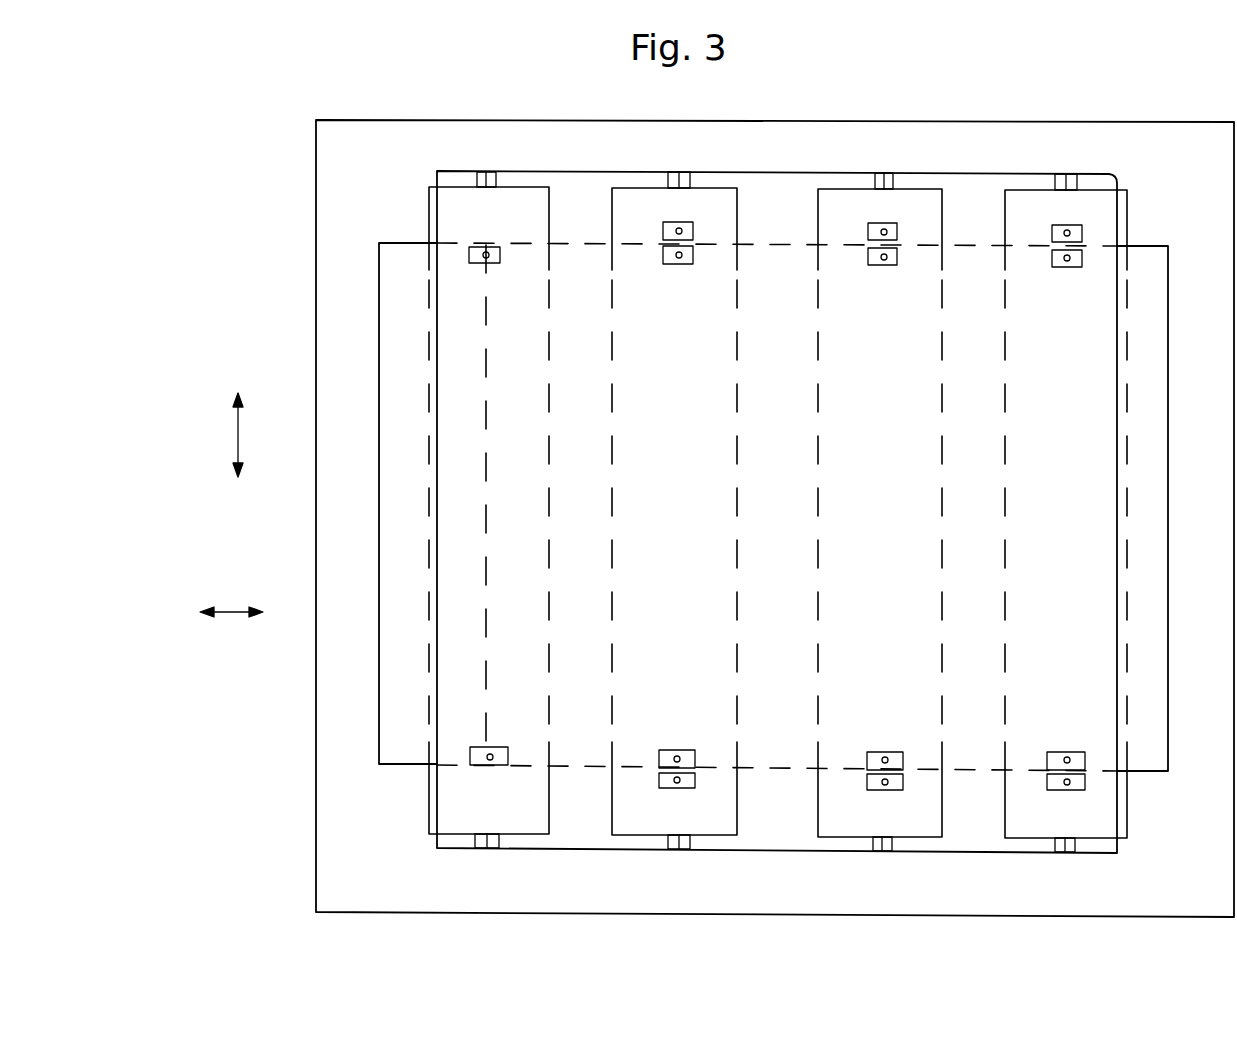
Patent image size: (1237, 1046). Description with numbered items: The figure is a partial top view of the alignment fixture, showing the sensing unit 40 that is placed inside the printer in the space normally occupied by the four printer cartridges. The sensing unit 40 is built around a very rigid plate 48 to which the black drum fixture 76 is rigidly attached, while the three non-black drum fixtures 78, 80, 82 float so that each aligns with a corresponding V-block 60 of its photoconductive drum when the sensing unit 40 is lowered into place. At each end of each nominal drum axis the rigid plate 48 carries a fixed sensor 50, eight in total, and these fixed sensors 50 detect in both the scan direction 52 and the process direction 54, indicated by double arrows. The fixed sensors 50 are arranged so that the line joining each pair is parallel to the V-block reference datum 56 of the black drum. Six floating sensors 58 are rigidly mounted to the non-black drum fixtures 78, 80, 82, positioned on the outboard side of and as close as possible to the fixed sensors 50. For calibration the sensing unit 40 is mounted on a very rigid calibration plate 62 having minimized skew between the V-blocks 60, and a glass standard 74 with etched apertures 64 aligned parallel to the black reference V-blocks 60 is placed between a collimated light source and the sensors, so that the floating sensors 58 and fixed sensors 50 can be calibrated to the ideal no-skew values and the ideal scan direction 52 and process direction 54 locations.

The sensing unit 40 is at (228, 186).
The rigid plate 48 is at (378, 722).
The fixed sensor 50 is at (665, 246).
The scan direction 52 is at (238, 437).
The process direction 54 is at (225, 612).
The V-block reference datum 56 is at (488, 392).
The floating sensor 58 is at (693, 222).
The V-block 60 is at (487, 171).
The calibration plate 62 is at (316, 697).
The etched aperture 64 is at (489, 257).
The glass standard 74 is at (1007, 173).
The drum fixture 76 is at (551, 633).
The non-black drum fixture 78 is at (739, 650).
The non-black drum fixture 80 is at (944, 652).
The non-black drum fixture 82 is at (1130, 648).